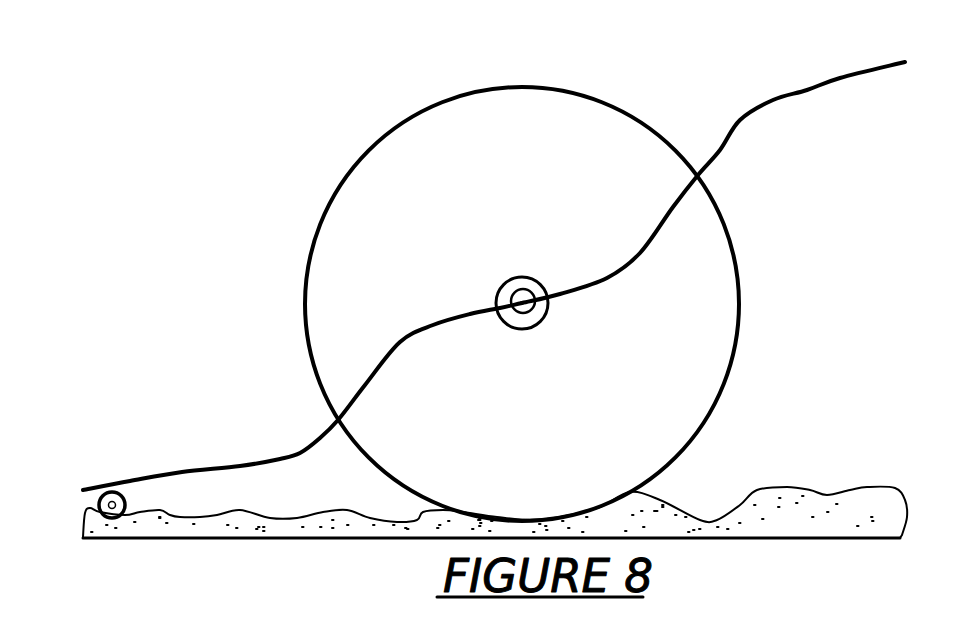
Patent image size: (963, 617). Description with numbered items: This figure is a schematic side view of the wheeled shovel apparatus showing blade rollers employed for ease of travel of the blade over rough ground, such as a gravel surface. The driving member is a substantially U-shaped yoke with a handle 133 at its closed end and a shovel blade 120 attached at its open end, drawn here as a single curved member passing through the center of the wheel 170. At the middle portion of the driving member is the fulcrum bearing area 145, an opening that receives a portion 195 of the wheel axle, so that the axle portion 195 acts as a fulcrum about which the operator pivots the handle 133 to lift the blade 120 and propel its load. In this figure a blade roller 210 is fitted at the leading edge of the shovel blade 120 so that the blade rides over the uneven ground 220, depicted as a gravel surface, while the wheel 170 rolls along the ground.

The shovel blade 120 is at (182, 472).
The handle 133 is at (838, 78).
The fulcrum bearing area 145 is at (510, 276).
The wheel 170 is at (740, 255).
The axle portion 195 is at (528, 298).
The roller 210 is at (93, 485).
The ground surface 220 is at (723, 513).